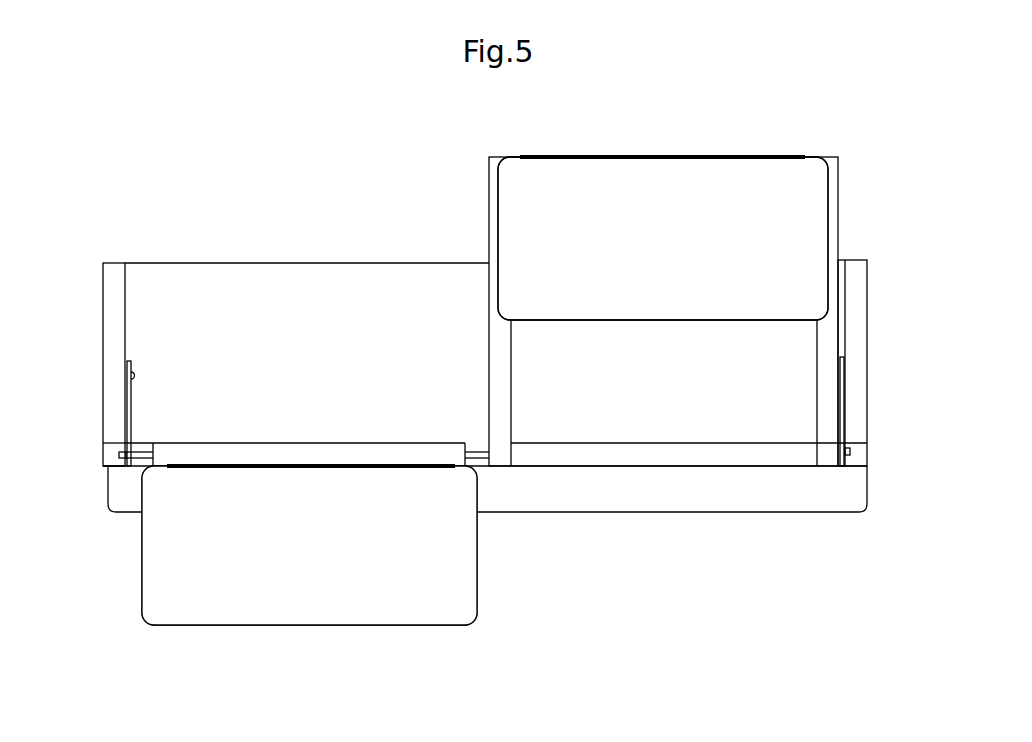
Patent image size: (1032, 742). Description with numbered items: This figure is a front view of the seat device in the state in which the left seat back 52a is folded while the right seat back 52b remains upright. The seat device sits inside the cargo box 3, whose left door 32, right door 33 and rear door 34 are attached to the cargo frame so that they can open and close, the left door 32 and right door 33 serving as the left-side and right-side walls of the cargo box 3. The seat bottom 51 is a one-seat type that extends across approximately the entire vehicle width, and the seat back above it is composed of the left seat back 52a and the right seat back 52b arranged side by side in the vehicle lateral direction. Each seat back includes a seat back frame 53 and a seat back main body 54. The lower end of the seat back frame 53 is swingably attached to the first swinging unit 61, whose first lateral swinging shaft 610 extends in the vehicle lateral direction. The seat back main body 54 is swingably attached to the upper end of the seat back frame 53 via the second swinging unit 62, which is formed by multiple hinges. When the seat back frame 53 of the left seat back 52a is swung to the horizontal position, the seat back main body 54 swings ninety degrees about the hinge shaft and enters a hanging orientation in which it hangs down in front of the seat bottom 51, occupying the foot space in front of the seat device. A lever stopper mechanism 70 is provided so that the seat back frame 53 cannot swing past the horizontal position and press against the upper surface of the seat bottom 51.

The cargo box 3 is at (304, 212).
The left door 32 is at (855, 303).
The right door 33 is at (113, 305).
The rear door 34 is at (209, 262).
The seat bottom 51 is at (688, 494).
The left seat back 52a is at (664, 323).
The right seat back 52b is at (388, 629).
The seat back frame 53 is at (464, 448).
The seat back main body 54 is at (710, 177).
The first swinging unit 61 is at (107, 467).
The first lateral swinging shaft 610 is at (110, 456).
The second swinging unit 62 is at (617, 157).
The lever stopper mechanism 70 is at (134, 412).